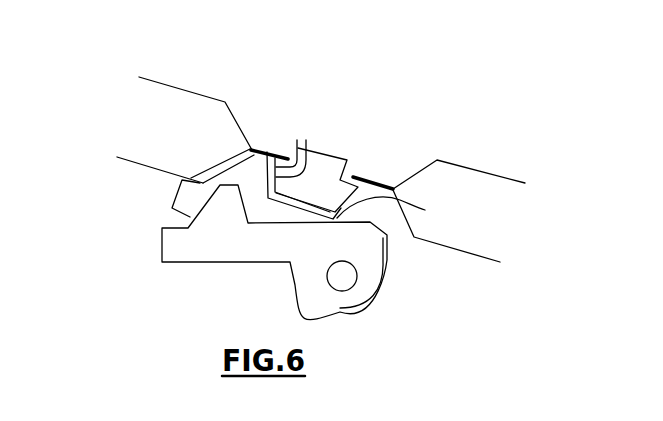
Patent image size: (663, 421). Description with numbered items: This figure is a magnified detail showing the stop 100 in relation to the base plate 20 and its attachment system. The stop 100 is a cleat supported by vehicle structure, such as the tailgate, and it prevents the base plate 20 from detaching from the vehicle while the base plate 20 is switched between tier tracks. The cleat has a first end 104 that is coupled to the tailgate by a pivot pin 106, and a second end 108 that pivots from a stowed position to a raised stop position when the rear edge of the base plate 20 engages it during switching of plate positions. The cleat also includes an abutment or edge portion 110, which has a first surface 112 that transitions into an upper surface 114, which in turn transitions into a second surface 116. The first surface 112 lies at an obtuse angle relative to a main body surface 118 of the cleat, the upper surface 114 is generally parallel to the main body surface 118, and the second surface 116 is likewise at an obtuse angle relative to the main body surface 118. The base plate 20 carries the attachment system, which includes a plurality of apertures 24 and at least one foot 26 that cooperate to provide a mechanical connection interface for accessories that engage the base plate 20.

The base plate 20 is at (160, 80).
The apertures 24 is at (352, 177).
The foot 26 is at (328, 165).
The stop 100 is at (269, 264).
The first end 104 is at (388, 252).
The pivot pin 106 is at (343, 278).
The second end 108 is at (174, 203).
The abutment or edge portion 110 is at (262, 140).
The first surface 112 is at (226, 161).
The upper surface 114 is at (283, 150).
The second surface 116 is at (302, 142).
The main body surface 118 is at (405, 207).